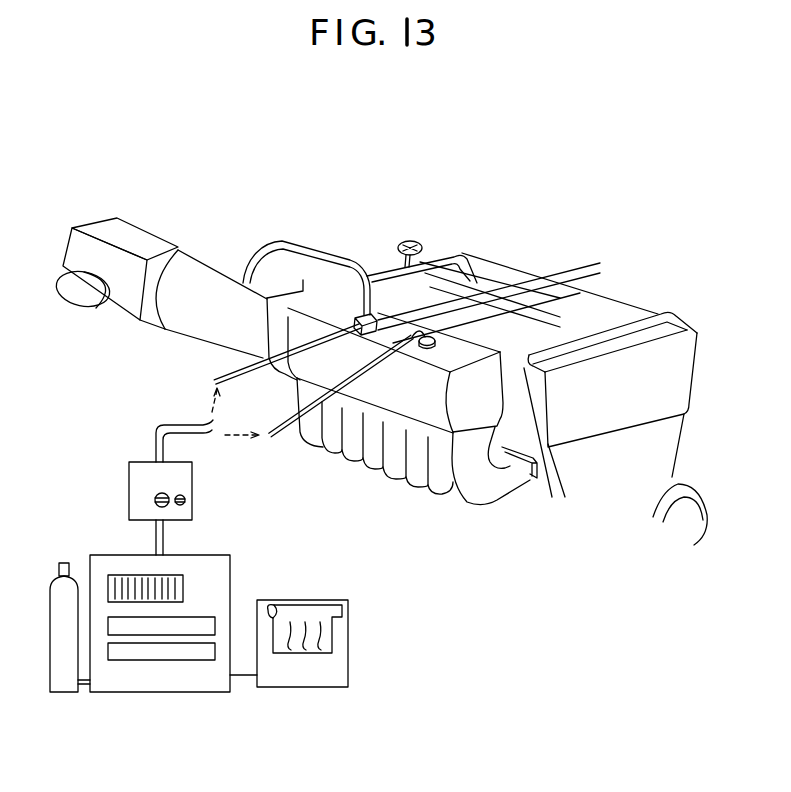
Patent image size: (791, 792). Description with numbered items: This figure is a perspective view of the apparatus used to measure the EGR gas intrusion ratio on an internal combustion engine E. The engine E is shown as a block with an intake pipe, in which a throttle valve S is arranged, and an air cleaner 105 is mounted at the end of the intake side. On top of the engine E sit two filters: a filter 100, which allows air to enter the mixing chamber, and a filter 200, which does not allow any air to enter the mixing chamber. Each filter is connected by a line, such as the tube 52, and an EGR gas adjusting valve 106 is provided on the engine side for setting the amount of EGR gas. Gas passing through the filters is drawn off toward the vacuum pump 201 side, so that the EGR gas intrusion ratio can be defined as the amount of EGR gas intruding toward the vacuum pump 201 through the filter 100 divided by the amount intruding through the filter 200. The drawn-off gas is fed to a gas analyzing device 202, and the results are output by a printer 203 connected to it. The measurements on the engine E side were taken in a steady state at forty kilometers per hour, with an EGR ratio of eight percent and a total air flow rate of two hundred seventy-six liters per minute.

The tube 52 is at (313, 252).
The filter 100 is at (432, 355).
The air cleaner 105 is at (121, 310).
The EGR gas adjusting valve 106 is at (415, 238).
The filter 200 is at (520, 296).
The vacuum pump 201 is at (188, 487).
The gas analyzing device 202 is at (177, 686).
The printer 203 is at (325, 680).
The internal combustion engine E is at (601, 321).
The throttle valve S is at (303, 302).